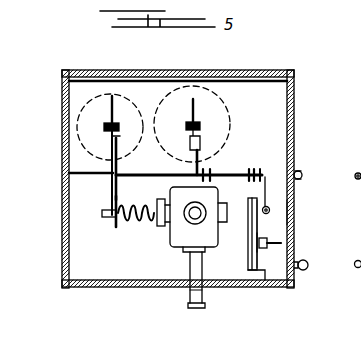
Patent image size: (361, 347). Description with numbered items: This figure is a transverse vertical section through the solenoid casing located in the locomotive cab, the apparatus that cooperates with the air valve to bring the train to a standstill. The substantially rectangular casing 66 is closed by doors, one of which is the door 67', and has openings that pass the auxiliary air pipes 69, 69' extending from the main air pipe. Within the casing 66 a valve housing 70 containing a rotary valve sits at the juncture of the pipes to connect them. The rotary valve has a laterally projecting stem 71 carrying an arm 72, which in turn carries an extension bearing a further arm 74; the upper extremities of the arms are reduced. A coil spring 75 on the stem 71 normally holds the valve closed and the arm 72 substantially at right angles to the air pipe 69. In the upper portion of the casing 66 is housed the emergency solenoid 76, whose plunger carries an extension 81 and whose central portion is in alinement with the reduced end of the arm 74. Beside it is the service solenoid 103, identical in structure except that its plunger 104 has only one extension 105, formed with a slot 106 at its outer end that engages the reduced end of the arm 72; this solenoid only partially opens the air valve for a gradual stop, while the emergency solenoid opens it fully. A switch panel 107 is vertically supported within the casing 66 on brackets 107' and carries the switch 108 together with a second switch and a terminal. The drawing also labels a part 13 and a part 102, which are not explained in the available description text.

The casing 66 is at (68, 218).
The door 67' is at (307, 212).
The service solenoid 103 is at (83, 110).
The extension 105 is at (105, 128).
The arm 72 is at (112, 150).
The shaft 13 is at (126, 176).
The arm 74 is at (196, 108).
The extension 81 is at (201, 127).
The emergency solenoid 76 is at (221, 143).
The arm 102 is at (268, 197).
The coil spring 75 is at (112, 222).
The stem 71 is at (130, 225).
The auxiliary air pipe 69 is at (177, 229).
The valve housing 70 is at (180, 246).
The auxiliary air pipe 69' is at (178, 315).
The switch panel 107 is at (240, 263).
The brackets 107' is at (275, 262).
The switch 108 is at (272, 244).
The slot 106 is at (226, 340).
The plunger 104 is at (345, 305).